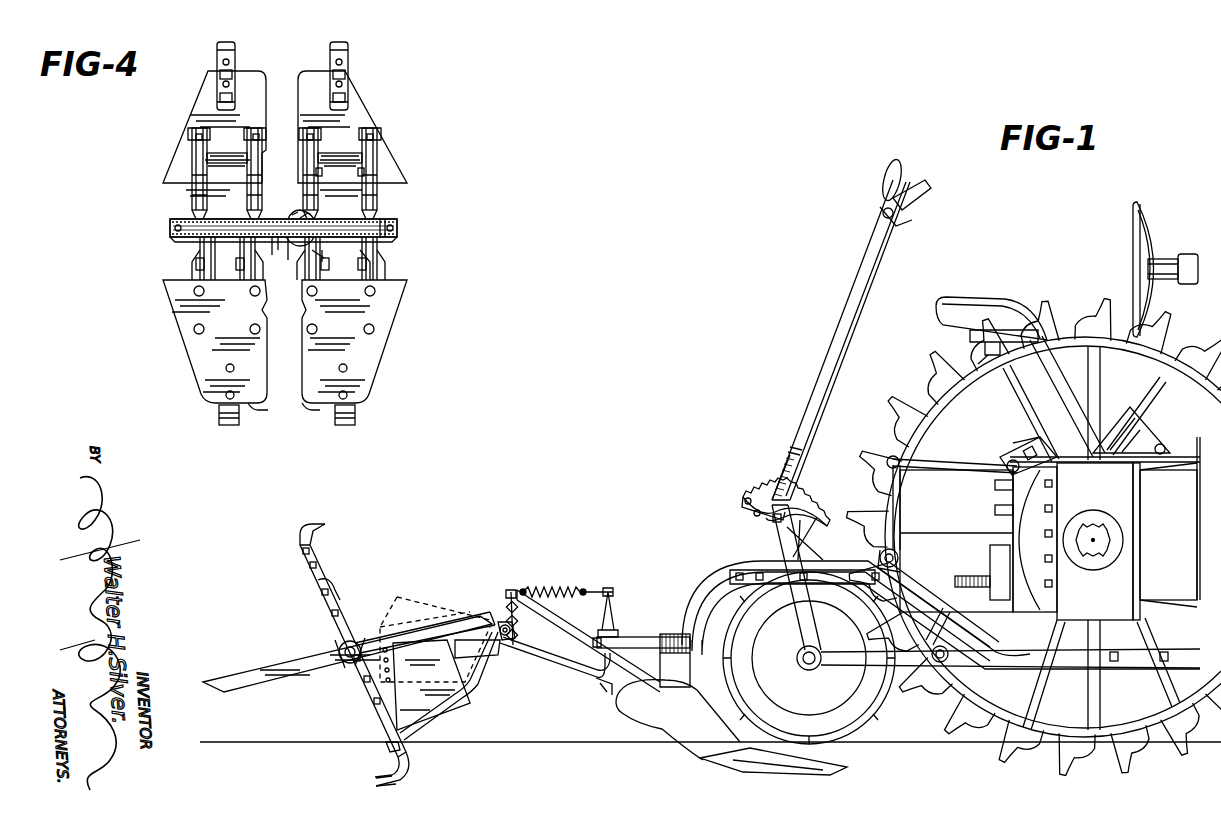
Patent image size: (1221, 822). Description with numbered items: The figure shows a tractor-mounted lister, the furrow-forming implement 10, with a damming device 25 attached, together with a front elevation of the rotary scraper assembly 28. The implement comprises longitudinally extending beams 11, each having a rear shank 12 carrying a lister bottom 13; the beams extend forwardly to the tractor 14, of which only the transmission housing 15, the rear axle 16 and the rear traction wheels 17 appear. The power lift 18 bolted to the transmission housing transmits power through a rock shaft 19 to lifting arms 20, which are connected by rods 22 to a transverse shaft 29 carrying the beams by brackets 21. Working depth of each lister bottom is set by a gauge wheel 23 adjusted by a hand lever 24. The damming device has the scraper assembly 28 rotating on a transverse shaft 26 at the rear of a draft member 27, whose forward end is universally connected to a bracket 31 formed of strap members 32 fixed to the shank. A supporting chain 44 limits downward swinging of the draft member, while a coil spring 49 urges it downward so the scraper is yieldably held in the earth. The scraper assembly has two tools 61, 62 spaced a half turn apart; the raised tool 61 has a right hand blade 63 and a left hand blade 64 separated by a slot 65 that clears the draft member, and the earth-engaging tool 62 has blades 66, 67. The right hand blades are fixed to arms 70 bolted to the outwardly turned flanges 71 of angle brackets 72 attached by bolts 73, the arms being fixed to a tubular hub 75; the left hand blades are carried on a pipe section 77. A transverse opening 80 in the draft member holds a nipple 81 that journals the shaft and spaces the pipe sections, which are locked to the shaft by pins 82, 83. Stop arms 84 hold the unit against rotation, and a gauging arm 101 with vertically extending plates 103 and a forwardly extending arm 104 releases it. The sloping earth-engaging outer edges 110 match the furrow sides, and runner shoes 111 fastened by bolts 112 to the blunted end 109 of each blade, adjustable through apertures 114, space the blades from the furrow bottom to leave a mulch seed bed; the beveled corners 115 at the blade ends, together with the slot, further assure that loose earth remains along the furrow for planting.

In FIG. 1, the furrow-forming implement 10 is at (712, 540).
In FIG. 1, the longitudinally extending beam 11 is at (690, 596).
In FIG. 1, the rear shank 12 is at (672, 660).
In FIG. 1, the lister bottom 13 is at (742, 760).
In FIG. 1, the tractor 14 is at (1087, 268).
In FIG. 1, the transmission housing 15 is at (1101, 516).
In FIG. 1, the rear axle 16 is at (1103, 549).
In FIG. 1, the rear traction wheel 17 is at (948, 400).
In FIG. 1, the power lift 18 is at (1022, 500).
In FIG. 1, the rock shaft 19 is at (1015, 449).
In FIG. 1, the lifting arm 20 is at (918, 462).
In FIG. 1, the bracket 21 is at (893, 582).
In FIG. 1, the rod 22 is at (897, 500).
In FIG. 1, the gauge wheel 23 is at (870, 701).
In FIG. 1, the hand lever 24 is at (876, 259).
In FIG. 1, the damming device 25 is at (496, 548).
In FIG. 1, the transverse shaft 26 is at (352, 640).
In FIG. 4, the draft member 27 is at (268, 250).
In FIG. 1, the rotary scraper assembly 28 is at (350, 556).
In FIG. 1, the transverse shaft 29 is at (897, 558).
In FIG. 1, the bracket 31 is at (640, 618).
In FIG. 1, the strap member 32 is at (587, 632).
In FIG. 1, the supporting chain 44 is at (512, 618).
In FIG. 1, the coil spring 49 is at (561, 590).
In FIG. 4, the scraper tool 61 is at (440, 154).
In FIG. 4, the scraper tool 62 is at (441, 331).
In FIG. 4, the right hand blade 63 is at (362, 102).
In FIG. 4, the left hand blade 64 is at (214, 94).
In FIG. 4, the slot 65 is at (285, 92).
In FIG. 4, the right hand blade 66 is at (372, 358).
In FIG. 4, the left hand blade 67 is at (196, 357).
In FIG. 4, the arm 70 is at (318, 250).
In FIG. 1, the arm 70 is at (347, 665).
In FIG. 4, the outwardly turned flange 71 is at (320, 150).
In FIG. 4, the angle bracket 72 is at (358, 174).
In FIG. 4, the bolt 73 is at (304, 158).
In FIG. 4, the tubular hub 75 is at (393, 219).
In FIG. 4, the pipe section 77 is at (186, 220).
In FIG. 4, the transverse opening 80 is at (303, 216).
In FIG. 4, the nipple 81 is at (292, 250).
In FIG. 4, the pin 82 is at (176, 233).
In FIG. 4, the pin 83 is at (392, 227).
In FIG. 4, the stop arm 84 is at (246, 257).
In FIG. 1, the stop arm 84 is at (322, 658).
In FIG. 1, the gauging arm 101 is at (455, 700).
In FIG. 1, the vertically extending plate 103 is at (414, 714).
In FIG. 1, the forwardly extending arm 104 is at (507, 626).
In FIG. 4, the blunted end 109 is at (318, 410).
In FIG. 4, the earth-engaging outer edge 110 is at (176, 330).
In FIG. 4, the runner shoe 111 is at (340, 50).
In FIG. 1, the runner shoe 111 is at (394, 775).
In FIG. 4, the bolt 112 is at (344, 76).
In FIG. 1, the bolt 112 is at (396, 752).
In FIG. 4, the aperture 114 is at (338, 63).
In FIG. 4, the lug 115 is at (258, 398).